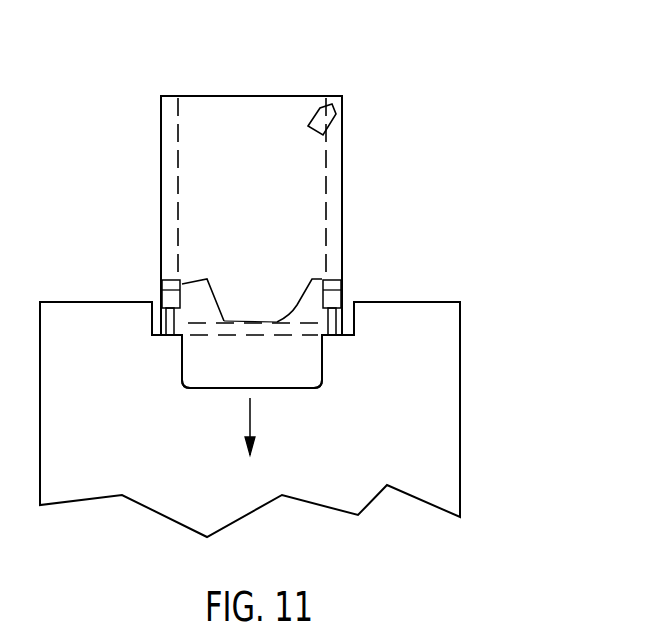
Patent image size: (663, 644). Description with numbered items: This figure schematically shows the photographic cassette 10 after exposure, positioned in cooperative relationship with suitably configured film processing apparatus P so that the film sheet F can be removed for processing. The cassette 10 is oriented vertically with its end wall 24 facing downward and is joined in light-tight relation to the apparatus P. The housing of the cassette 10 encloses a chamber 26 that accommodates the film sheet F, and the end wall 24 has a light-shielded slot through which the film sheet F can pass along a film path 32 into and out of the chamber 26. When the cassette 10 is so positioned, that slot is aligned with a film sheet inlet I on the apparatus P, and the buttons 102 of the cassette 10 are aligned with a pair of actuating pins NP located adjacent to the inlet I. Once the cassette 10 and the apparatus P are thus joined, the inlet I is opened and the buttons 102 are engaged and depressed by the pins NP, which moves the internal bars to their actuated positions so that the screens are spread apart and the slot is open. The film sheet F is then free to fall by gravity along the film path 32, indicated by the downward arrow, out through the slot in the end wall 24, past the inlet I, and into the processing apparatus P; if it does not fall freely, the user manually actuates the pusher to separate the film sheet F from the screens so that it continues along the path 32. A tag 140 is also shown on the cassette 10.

The photographic cassette 10 is at (161, 140).
The identification tag 140 is at (322, 120).
The film processing apparatus P is at (460, 418).
The film sheet F is at (255, 373).
The film sheet inlet I is at (205, 335).
The chamber 26 is at (302, 304).
The end wall 24 is at (248, 328).
The buttons 102 is at (172, 290).
The actuating pins NP is at (364, 377).
The film path 32 is at (250, 408).